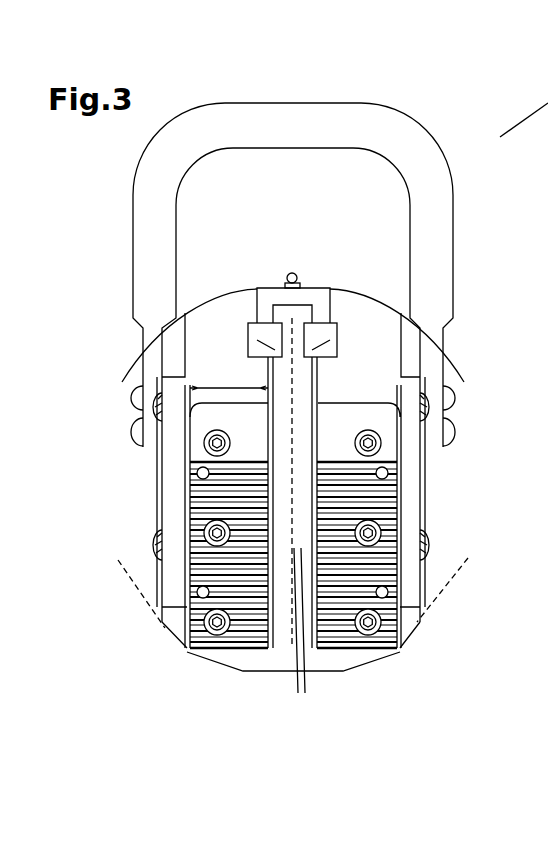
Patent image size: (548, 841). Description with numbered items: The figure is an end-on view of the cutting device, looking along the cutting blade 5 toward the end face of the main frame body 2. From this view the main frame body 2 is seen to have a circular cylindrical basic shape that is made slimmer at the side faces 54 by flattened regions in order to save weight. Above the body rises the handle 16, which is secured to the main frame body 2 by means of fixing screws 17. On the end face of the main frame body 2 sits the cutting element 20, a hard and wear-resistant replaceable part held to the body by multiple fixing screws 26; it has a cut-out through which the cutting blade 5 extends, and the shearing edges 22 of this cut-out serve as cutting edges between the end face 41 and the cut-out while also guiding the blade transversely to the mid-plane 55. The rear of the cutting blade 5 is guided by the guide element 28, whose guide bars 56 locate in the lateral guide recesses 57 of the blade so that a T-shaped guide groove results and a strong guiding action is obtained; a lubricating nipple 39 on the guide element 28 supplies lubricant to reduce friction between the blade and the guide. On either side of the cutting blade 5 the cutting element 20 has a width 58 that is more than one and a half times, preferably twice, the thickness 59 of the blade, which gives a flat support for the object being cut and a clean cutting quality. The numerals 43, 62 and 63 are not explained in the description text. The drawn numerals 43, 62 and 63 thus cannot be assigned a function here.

The main frame body 2 is at (178, 348).
The cutting blade 5 is at (287, 636).
The handle 16 is at (432, 152).
The fixing screws 17 is at (122, 413).
The cutting element 20 is at (248, 620).
The shearing edges 22 is at (305, 633).
The fixing screws 26 is at (207, 630).
The guide element 28 is at (322, 288).
The lubricating nipple 39 is at (292, 264).
The end face 41 is at (203, 466).
The plate stack 43 is at (190, 565).
The side faces 54 is at (427, 575).
The mid-plane 55 is at (422, 509).
The guide bars 56 is at (314, 330).
The lateral guide recesses 57 is at (305, 350).
The width 58 is at (190, 380).
The thickness 59 is at (400, 414).
The shaft 62 is at (331, 388).
The base 63 is at (413, 628).